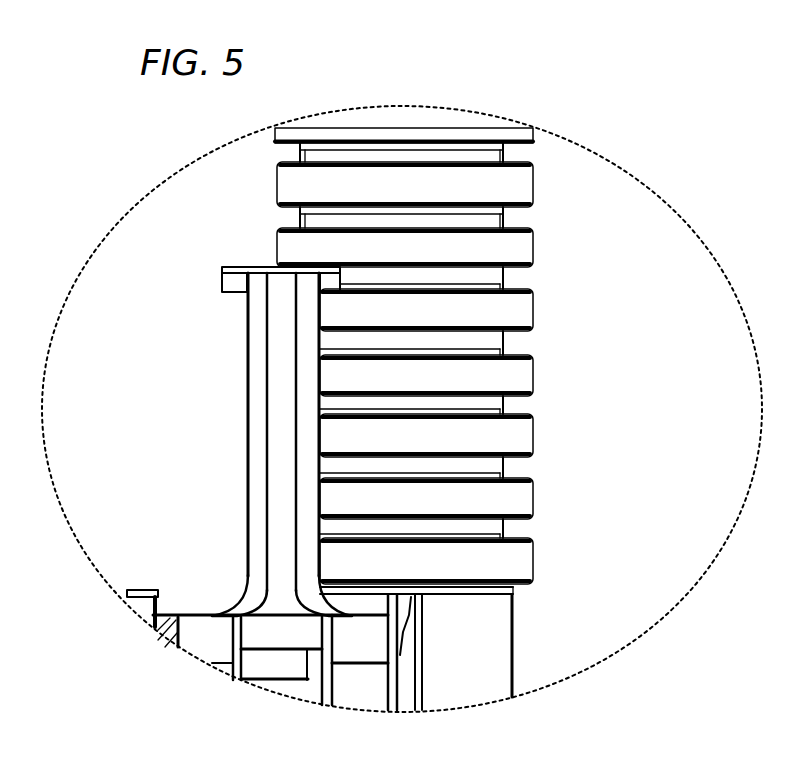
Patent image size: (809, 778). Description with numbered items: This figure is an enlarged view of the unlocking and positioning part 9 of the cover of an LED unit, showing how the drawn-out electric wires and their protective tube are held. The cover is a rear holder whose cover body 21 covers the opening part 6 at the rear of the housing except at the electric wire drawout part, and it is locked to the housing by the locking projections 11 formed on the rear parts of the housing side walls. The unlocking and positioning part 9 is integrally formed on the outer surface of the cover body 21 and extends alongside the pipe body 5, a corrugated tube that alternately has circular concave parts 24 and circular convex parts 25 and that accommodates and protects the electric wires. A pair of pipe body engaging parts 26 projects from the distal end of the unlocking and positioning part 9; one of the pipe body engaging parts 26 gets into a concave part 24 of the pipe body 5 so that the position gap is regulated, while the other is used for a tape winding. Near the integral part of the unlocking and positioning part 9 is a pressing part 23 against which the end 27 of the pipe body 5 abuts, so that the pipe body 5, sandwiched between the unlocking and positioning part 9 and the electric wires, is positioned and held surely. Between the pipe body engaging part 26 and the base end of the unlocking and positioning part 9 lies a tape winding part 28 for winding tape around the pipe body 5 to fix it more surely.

The pipe body 5 is at (535, 187).
The opening part 6 is at (158, 613).
The unlocking and positioning part 9 is at (283, 345).
The locking projection 11 is at (260, 662).
The cover body 21 is at (198, 613).
The pressing part 23 is at (365, 582).
The concave part 24 is at (513, 277).
The convex part 25 is at (513, 247).
The pipe body engaging part 26 is at (322, 268).
The end 27 is at (463, 597).
The tape winding part 28 is at (285, 427).